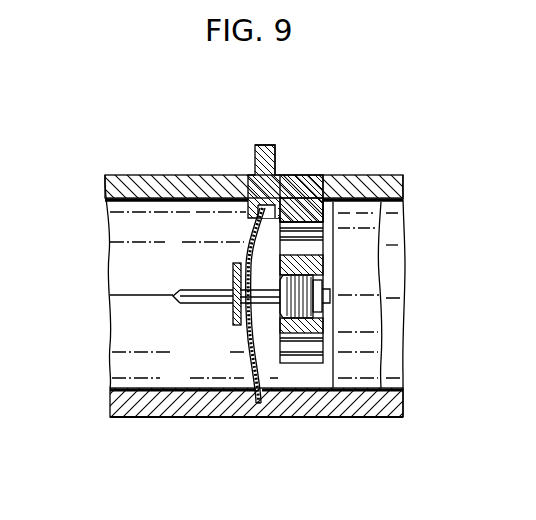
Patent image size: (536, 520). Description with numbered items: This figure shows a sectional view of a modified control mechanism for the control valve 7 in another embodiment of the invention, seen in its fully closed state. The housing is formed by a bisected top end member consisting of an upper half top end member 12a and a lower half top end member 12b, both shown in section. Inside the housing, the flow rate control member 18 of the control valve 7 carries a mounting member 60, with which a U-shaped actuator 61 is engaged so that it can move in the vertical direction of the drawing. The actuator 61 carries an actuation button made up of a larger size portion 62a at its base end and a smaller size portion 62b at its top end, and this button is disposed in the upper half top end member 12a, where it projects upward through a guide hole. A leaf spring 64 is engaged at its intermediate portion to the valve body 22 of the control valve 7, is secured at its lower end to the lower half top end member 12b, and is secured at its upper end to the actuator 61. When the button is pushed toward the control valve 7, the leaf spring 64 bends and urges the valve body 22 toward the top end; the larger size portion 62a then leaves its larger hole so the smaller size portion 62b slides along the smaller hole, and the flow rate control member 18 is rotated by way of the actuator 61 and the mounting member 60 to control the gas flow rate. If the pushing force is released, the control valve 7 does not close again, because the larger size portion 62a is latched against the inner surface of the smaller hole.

The control valve 7 is at (356, 239).
The upper half top end member 12a is at (373, 186).
The lower half top end member 12b is at (182, 403).
The flow rate control member 18 is at (298, 300).
The valve body 22 is at (200, 291).
The mounting member 60 is at (325, 266).
The U-shaped actuator 61 is at (312, 204).
The larger size portion 62a is at (247, 176).
The smaller size portion 62b is at (262, 152).
The leaf spring 64 is at (246, 352).